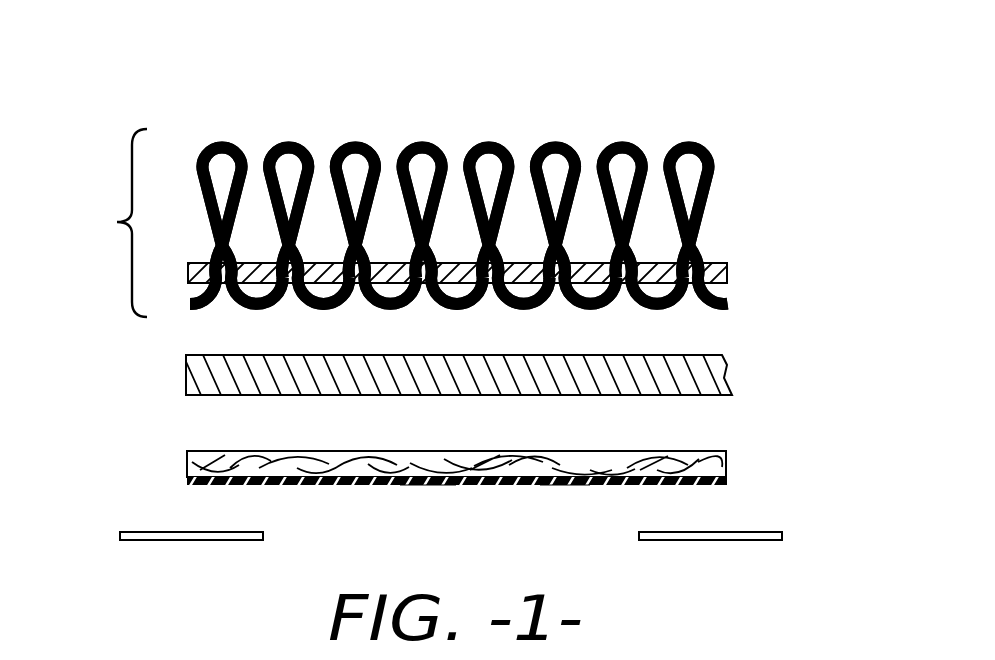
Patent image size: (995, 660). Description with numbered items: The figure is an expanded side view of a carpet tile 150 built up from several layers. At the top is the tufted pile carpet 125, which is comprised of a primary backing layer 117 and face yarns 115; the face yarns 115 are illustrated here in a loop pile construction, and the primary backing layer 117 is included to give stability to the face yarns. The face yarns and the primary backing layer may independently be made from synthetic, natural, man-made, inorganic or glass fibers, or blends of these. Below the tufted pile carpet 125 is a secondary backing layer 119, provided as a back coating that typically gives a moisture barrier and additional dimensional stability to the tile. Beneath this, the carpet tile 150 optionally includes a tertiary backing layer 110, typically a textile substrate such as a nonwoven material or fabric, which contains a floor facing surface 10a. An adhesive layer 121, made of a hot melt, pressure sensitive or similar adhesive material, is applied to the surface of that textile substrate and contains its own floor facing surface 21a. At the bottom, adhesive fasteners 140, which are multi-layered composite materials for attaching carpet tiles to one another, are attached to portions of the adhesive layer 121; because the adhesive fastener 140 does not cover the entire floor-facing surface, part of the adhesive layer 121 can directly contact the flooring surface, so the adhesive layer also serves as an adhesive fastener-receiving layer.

The carpet tile 150 is at (781, 136).
The tufted pile carpet 125 is at (102, 223).
The face yarns 115 is at (423, 142).
The primary backing layer 117 is at (707, 263).
The secondary backing layer 119 is at (710, 355).
The tertiary backing layer 110 is at (712, 451).
The adhesive layer 121 is at (726, 484).
The floor facing surface 10a is at (428, 485).
The floor facing surface 21a is at (563, 485).
The adhesive fastener 140 is at (122, 537).